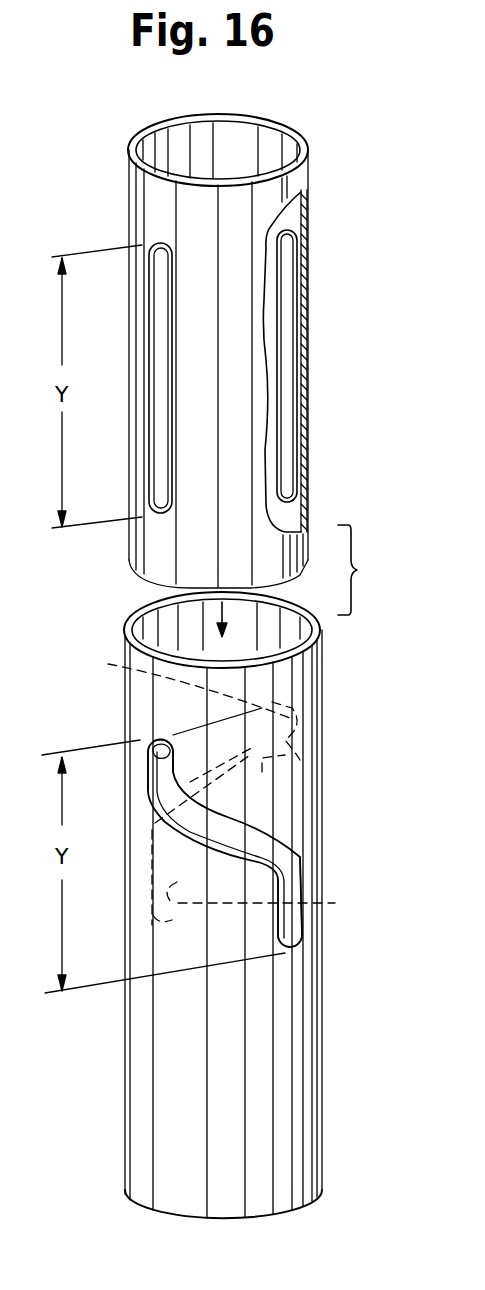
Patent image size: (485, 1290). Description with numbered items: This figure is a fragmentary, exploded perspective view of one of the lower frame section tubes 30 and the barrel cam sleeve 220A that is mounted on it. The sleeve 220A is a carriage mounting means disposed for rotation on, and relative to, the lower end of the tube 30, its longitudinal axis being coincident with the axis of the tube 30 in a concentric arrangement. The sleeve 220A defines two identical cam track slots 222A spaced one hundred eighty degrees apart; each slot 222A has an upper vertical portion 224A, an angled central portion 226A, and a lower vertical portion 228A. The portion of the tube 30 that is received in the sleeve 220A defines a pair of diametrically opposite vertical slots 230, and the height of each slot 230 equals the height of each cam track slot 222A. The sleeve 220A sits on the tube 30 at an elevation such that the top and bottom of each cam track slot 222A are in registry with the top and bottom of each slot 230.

The lower frame section tube 30 is at (303, 176).
The vertical slot 230 is at (163, 321).
The barrel cam sleeve 220A is at (322, 1052).
The cam track slot 222A is at (270, 840).
The upper vertical portion 224A is at (160, 738).
The angled central portion 226A is at (262, 757).
The lower vertical portion 228A is at (280, 924).